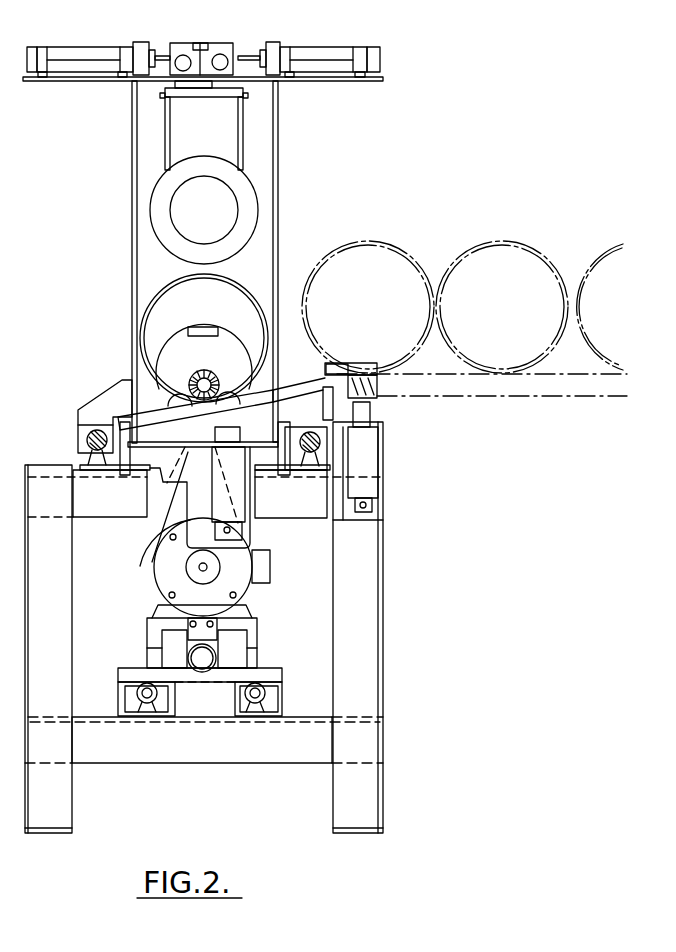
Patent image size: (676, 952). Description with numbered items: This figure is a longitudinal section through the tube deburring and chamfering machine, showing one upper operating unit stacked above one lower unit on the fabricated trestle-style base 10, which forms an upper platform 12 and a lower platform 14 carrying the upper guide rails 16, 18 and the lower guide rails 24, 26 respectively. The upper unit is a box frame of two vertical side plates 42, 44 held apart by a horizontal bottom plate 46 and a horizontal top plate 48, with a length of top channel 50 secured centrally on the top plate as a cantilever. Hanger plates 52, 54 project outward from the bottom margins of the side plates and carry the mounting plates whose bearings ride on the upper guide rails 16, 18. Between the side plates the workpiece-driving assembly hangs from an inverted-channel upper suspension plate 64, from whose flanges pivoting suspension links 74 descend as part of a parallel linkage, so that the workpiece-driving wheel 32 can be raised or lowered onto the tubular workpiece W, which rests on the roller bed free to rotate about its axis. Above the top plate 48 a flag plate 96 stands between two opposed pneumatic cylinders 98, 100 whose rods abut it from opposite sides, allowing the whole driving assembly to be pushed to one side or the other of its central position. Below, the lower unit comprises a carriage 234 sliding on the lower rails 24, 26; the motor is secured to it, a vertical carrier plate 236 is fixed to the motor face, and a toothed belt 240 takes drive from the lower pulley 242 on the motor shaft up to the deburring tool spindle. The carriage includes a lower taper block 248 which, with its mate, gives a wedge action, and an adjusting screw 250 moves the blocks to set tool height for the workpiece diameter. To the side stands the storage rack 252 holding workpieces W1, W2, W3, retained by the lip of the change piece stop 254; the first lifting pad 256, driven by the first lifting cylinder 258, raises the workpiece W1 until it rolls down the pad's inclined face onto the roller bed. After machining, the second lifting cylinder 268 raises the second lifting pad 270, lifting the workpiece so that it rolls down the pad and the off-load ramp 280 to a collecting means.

The base 10 is at (383, 612).
The upper platform 12 is at (92, 497).
The lower platform 14 is at (103, 745).
The upper guide rail 16 is at (80, 447).
The upper guide rail 18 is at (320, 447).
The lower guide rail 24 is at (155, 714).
The lower guide rail 26 is at (255, 714).
The workpiece-driving wheel 32 is at (245, 190).
The side plate 42 is at (135, 187).
The side plate 44 is at (277, 218).
The bottom plate 46 is at (268, 395).
The top plate 48 is at (337, 82).
The top channel 50 is at (220, 46).
The hanger plate 52 is at (95, 410).
The hanger plate 54 is at (318, 395).
The upper suspension plate 64 is at (197, 88).
The pivoting suspension links 74 is at (167, 137).
The flag plate 96 is at (206, 38).
The pneumatic cylinder 98 is at (85, 55).
The pneumatic cylinder 100 is at (325, 57).
The carriage 234 is at (252, 631).
The carrier plate 236 is at (175, 581).
The toothed belt 240 is at (160, 525).
The lower pulley 242 is at (210, 572).
The lower taper block 248 is at (230, 657).
The adjusting screw 250 is at (197, 657).
The rack 252 is at (558, 383).
The change piece stop 254 is at (333, 363).
The first lifting pad 256 is at (373, 388).
The first lifting cylinder 258 is at (367, 465).
The second lifting cylinder 268 is at (237, 487).
The second lifting pad 270 is at (240, 382).
The off-load ramp 280 is at (157, 423).
The workpiece W is at (152, 292).
The workpiece W1 is at (366, 242).
The workpiece W2 is at (490, 243).
The workpiece W3 is at (603, 250).